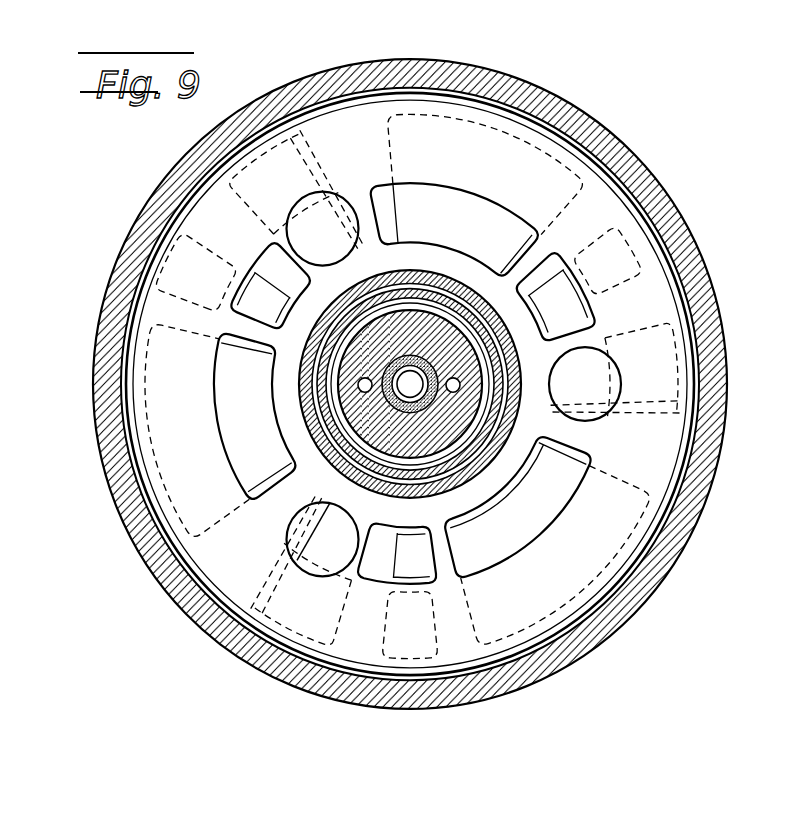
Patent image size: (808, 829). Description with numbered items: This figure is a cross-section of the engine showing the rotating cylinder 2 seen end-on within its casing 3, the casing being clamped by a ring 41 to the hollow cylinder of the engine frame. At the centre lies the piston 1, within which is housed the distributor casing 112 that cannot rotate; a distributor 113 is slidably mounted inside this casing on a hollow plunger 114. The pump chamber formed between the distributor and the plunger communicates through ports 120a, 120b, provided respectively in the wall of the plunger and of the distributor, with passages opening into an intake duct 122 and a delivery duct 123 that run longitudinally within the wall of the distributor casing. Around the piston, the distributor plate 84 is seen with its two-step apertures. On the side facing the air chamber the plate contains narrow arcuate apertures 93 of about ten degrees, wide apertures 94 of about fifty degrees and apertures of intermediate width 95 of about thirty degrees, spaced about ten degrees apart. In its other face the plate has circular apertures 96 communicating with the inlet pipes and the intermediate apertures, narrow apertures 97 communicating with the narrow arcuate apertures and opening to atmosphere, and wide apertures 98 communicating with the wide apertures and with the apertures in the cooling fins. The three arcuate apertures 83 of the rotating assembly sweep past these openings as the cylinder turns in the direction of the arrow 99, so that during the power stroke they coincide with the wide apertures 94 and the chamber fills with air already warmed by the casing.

The hollow piston 1 is at (466, 487).
The cylinder 2 is at (433, 482).
The casing 3 is at (380, 482).
The ring 41 is at (690, 502).
The arcuate apertures 83 is at (247, 545).
The distributor plate 84 is at (655, 463).
The narrow arcuate apertures 93 is at (447, 672).
The wide apertures 94 is at (655, 545).
The apertures of intermediate width 95 is at (670, 358).
The circular apertures 96 is at (317, 577).
The narrow apertures 97 is at (378, 580).
The wide apertures 98 is at (553, 518).
The arrow 99 is at (607, 660).
The distributor casing 112 is at (432, 338).
The distributor 113 is at (438, 337).
The hollow plunger 114 is at (407, 358).
The port 120a is at (386, 378).
The port 120b is at (470, 370).
The intake duct 122 is at (460, 386).
The delivery duct 123 is at (358, 385).